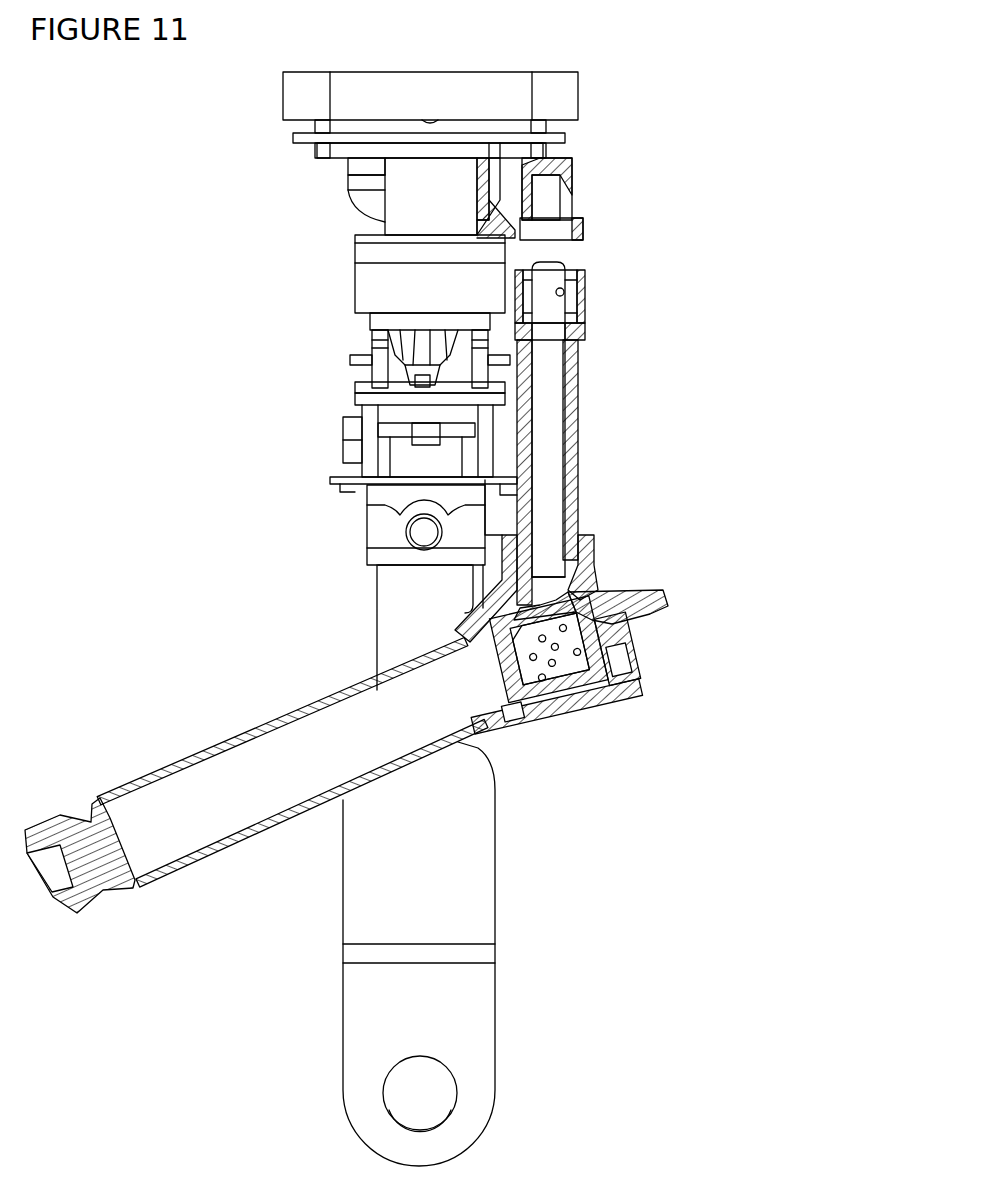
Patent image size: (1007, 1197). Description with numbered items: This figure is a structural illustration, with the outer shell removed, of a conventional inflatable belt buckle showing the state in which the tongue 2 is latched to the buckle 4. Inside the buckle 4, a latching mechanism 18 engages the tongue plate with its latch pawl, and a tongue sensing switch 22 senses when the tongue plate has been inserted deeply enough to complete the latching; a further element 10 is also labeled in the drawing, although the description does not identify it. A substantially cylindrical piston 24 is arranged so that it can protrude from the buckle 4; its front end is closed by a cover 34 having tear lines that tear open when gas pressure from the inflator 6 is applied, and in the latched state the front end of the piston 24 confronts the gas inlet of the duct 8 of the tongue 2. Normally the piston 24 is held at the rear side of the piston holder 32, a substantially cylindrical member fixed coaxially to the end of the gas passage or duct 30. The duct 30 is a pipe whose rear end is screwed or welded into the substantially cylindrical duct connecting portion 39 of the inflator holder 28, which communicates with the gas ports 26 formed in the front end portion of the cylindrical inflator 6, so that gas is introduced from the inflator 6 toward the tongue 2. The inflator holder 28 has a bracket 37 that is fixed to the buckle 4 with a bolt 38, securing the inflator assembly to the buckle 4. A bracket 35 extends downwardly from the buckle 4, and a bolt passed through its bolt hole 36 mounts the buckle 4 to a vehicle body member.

The tongue 2 is at (262, 162).
The buckle 4 is at (285, 385).
The inflator 6 is at (233, 732).
The duct 8 is at (548, 207).
The motor housing 10 is at (378, 215).
The latching mechanism 18 is at (372, 343).
The tongue sensing switch 22 is at (352, 442).
The piston 24 is at (567, 300).
The gas ports 26 is at (600, 690).
The inflator holder 28 is at (600, 672).
The gas passage (duct) 30 is at (578, 448).
The piston holder 32 is at (585, 346).
The cover 34 is at (557, 262).
The bracket 35 is at (484, 883).
The bolt hole 36 is at (448, 1095).
The bracket 37 is at (487, 528).
The bolt 38 is at (378, 530).
The duct connecting portion 39 is at (592, 550).